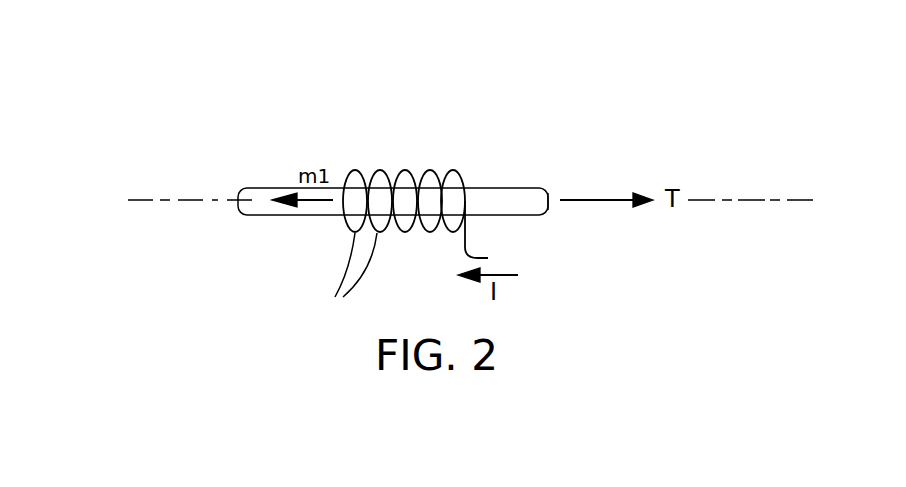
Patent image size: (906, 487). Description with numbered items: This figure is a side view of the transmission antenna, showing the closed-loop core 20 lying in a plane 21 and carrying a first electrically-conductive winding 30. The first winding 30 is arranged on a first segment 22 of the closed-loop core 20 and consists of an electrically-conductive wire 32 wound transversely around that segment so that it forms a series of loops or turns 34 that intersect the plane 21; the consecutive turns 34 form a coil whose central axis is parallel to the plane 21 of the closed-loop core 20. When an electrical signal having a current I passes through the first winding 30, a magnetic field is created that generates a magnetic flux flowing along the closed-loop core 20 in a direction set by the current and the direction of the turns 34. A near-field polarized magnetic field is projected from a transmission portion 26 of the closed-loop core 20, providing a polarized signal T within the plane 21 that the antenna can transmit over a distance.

The closed-loop core 20 is at (505, 195).
The plane 21 is at (147, 200).
The first segment 22 is at (382, 193).
The transmission portion 26 is at (552, 193).
The first electrically-conductive winding 30 is at (456, 199).
The electrically-conductive wire 32 is at (485, 258).
The turns 34 is at (351, 279).